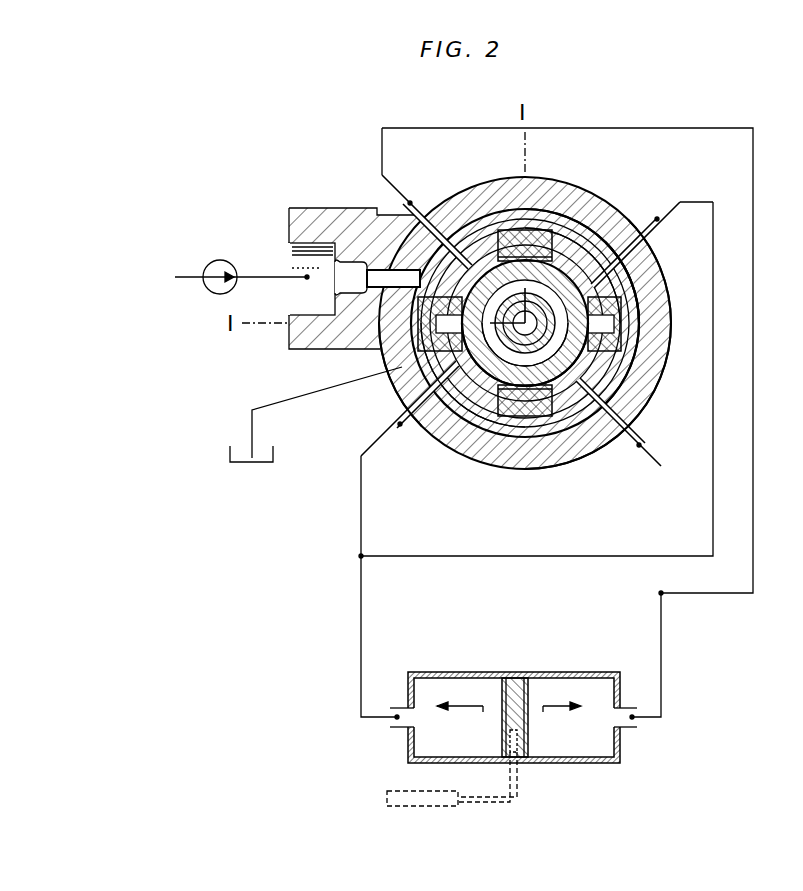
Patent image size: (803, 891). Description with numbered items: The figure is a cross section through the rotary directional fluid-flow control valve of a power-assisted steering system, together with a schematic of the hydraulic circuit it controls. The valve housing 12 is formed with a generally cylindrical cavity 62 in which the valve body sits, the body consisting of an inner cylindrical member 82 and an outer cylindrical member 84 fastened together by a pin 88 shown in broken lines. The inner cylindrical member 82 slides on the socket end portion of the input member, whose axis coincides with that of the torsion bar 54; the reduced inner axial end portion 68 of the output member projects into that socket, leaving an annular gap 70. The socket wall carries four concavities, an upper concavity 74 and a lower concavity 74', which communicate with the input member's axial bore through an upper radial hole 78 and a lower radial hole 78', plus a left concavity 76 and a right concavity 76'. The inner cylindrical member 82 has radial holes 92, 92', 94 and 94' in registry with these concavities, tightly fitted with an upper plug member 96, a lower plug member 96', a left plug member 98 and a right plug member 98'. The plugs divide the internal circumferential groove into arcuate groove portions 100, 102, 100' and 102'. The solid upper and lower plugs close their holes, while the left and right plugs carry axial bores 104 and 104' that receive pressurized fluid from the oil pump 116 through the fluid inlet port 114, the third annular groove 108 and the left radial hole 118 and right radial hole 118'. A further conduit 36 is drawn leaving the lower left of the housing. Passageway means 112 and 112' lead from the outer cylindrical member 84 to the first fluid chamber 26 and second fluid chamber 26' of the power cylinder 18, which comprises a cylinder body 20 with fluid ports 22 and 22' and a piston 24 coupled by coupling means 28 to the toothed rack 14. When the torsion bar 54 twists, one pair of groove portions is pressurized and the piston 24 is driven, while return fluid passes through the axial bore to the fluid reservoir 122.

The valve housing 12 is at (345, 204).
The toothed rack 14 is at (420, 802).
The power cylinder 18 is at (513, 670).
The cylinder body 20 is at (455, 672).
The fluid port 22 is at (650, 736).
The fluid port 22' is at (374, 734).
The piston 24 is at (530, 740).
The first fluid chamber 26 is at (576, 695).
The second fluid chamber 26' is at (441, 695).
The coupling means 28 is at (483, 802).
The conduit 36 is at (428, 432).
The torsion bar 54 is at (570, 430).
The cylindrical cavity 62 is at (612, 205).
The reduced inner axial end portion 68 is at (455, 440).
The gap 70 is at (640, 400).
The upper concavity 74 is at (548, 252).
The lower concavity 74' is at (522, 416).
The left concavity 76 is at (504, 323).
The right concavity 76' is at (665, 271).
The upper radial hole 78 is at (525, 292).
The lower radial hole 78' is at (496, 415).
The inner cylindrical member 82 is at (592, 222).
The outer cylindrical member 84 is at (648, 213).
The pin 88 is at (536, 240).
The radial hole 92 is at (525, 263).
The radial hole 92' is at (516, 414).
The radial hole 94 is at (398, 254).
The radial hole 94' is at (655, 364).
The upper plug member 96 is at (543, 203).
The lower plug member 96' is at (525, 449).
The left plug member 98 is at (414, 320).
The right plug member 98' is at (649, 313).
The arcuate groove portion 100 is at (427, 211).
The arcuate groove portion 100' is at (659, 274).
The arcuate groove portion 102 is at (618, 430).
The arcuate groove portion 102' is at (327, 412).
The axial bore 104 is at (441, 323).
The axial bore 104' is at (611, 340).
The third annular groove 108 is at (492, 222).
The passageway means 112 is at (557, 423).
The passageway means 112' is at (351, 587).
The fluid inlet port 114 is at (292, 260).
The oil pump 116 is at (221, 260).
The left radial hole 118 is at (351, 374).
The right radial hole 118' is at (675, 364).
The fluid reservoir 122 is at (275, 455).